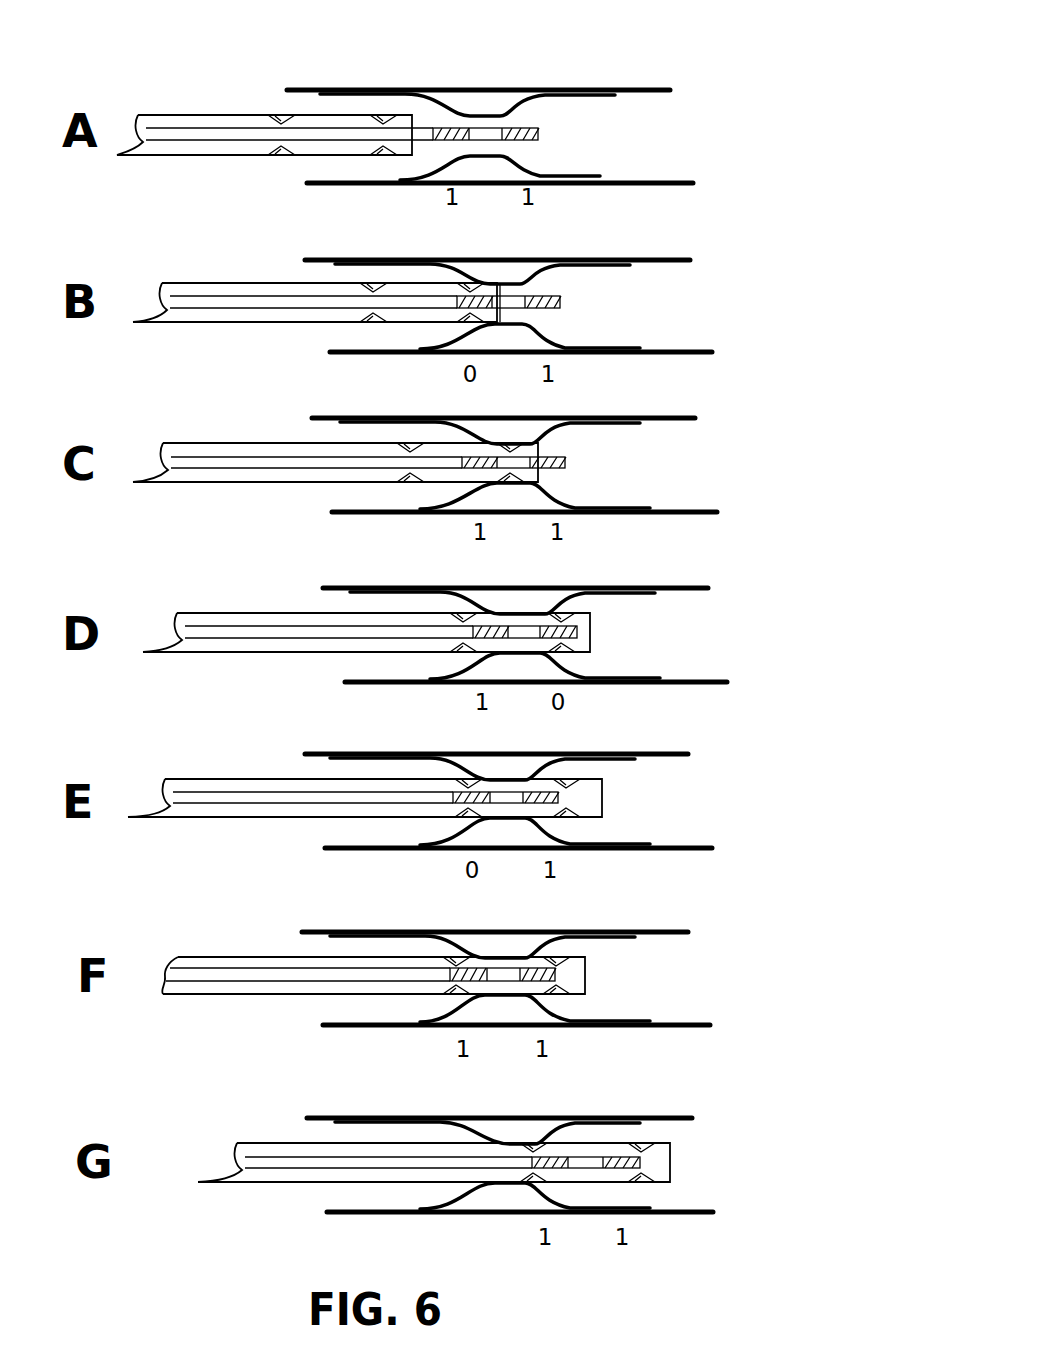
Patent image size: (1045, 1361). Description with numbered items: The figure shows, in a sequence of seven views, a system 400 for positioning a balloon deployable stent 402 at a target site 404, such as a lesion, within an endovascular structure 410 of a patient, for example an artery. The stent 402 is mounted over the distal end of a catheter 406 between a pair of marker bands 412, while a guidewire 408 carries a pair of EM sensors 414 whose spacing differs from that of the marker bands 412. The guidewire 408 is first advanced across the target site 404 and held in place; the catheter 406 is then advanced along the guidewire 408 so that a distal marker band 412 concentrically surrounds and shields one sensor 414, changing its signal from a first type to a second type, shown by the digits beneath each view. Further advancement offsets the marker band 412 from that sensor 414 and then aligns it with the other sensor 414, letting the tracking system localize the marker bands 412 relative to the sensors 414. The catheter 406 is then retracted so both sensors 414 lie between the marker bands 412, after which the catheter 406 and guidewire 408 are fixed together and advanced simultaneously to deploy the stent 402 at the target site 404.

The system 400 is at (549, 91).
The balloon deployable stent 402 is at (328, 115).
The target site 404 is at (519, 112).
The catheter 406 is at (393, 637).
The guidewire 408 is at (445, 611).
The endovascular structure 410 is at (640, 90).
The marker bands 412 is at (436, 98).
The EM sensors 414 is at (513, 128).